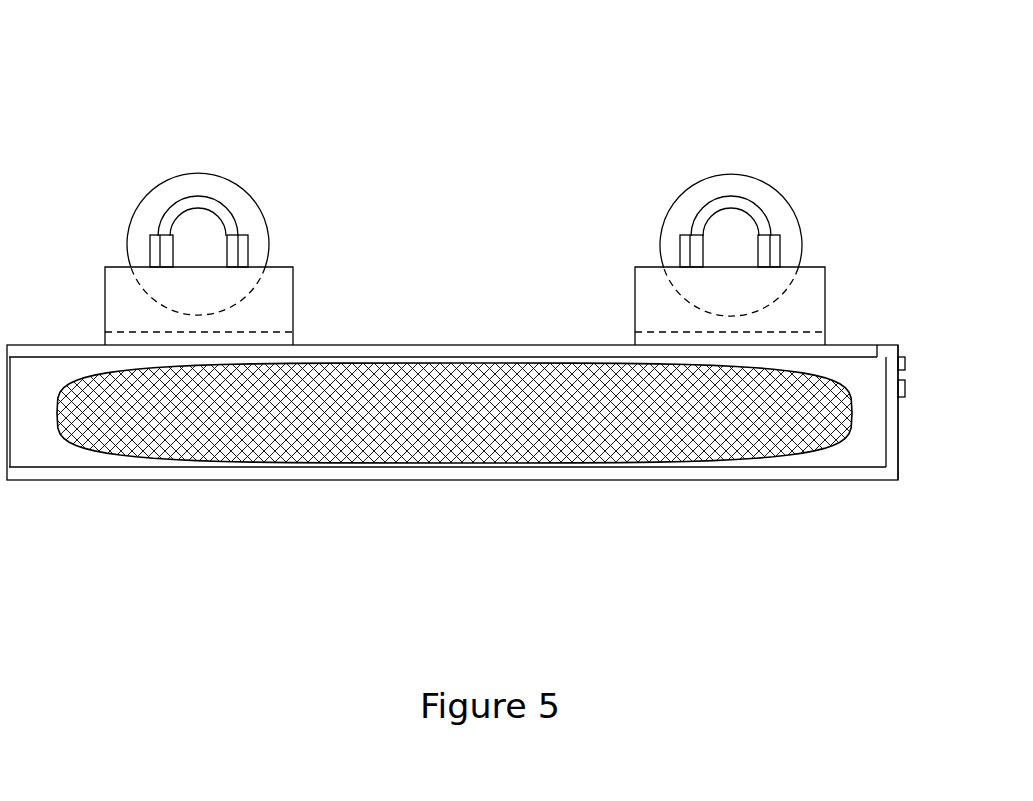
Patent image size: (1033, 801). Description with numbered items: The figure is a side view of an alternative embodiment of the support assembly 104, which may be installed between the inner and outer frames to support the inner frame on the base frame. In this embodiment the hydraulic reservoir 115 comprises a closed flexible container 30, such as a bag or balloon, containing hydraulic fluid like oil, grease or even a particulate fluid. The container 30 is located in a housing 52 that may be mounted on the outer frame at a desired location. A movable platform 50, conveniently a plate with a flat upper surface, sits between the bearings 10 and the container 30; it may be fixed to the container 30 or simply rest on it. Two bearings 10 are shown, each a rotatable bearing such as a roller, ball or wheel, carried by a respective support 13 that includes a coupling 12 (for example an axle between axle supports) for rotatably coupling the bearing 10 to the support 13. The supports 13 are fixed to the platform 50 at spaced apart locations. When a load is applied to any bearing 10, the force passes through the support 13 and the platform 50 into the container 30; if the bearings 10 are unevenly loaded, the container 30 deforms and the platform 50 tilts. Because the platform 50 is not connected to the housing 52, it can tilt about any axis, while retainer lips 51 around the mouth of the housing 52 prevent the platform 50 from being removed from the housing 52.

The support assembly 104 is at (473, 173).
The bearing 10 is at (228, 190).
The coupling 12 is at (250, 247).
The support 13 is at (282, 292).
The closed flexible container 30 is at (57, 410).
The movable platform 50 is at (377, 343).
The retainer lip 51 is at (879, 342).
The housing 52 is at (898, 422).
The hydraulic reservoir 115 is at (475, 390).